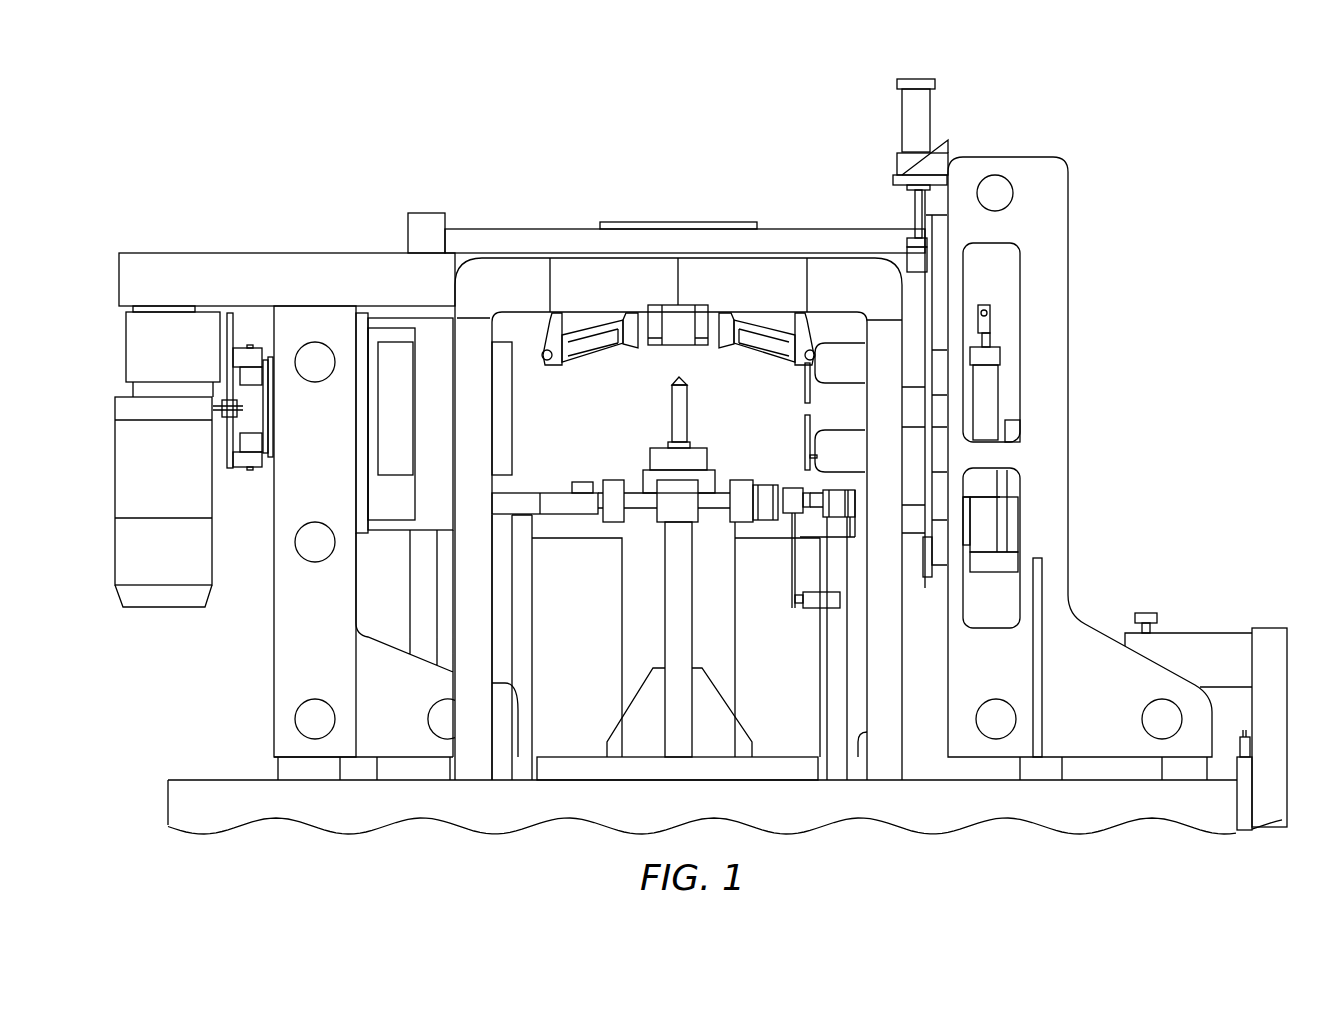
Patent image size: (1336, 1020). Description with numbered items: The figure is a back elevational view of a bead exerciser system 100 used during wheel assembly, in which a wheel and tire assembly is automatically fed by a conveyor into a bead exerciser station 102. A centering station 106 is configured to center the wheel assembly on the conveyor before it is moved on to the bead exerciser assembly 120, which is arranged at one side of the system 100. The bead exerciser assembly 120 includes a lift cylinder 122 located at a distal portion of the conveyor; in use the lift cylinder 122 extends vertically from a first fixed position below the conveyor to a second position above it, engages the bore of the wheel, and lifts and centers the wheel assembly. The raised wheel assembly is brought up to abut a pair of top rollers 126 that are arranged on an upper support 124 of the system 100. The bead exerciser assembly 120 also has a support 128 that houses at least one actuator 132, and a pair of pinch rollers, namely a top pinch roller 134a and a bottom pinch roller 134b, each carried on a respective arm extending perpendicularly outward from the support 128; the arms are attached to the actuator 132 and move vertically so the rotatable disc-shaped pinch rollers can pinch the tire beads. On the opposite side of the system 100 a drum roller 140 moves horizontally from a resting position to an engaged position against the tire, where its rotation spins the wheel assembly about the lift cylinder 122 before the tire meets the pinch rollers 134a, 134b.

The bead exerciser system 100 is at (302, 111).
The bead exerciser station 102 is at (621, 198).
The centering station 106 is at (651, 401).
The bead exerciser assembly 120 is at (1025, 117).
The lift cylinder 122 is at (672, 412).
The upper support 124 is at (847, 287).
The top roller 126 is at (597, 328).
The support 128 is at (1047, 291).
The actuator 132 is at (985, 485).
The top pinch roller 134a is at (804, 390).
The bottom pinch roller 134b is at (804, 421).
The drum roller 140 is at (512, 388).